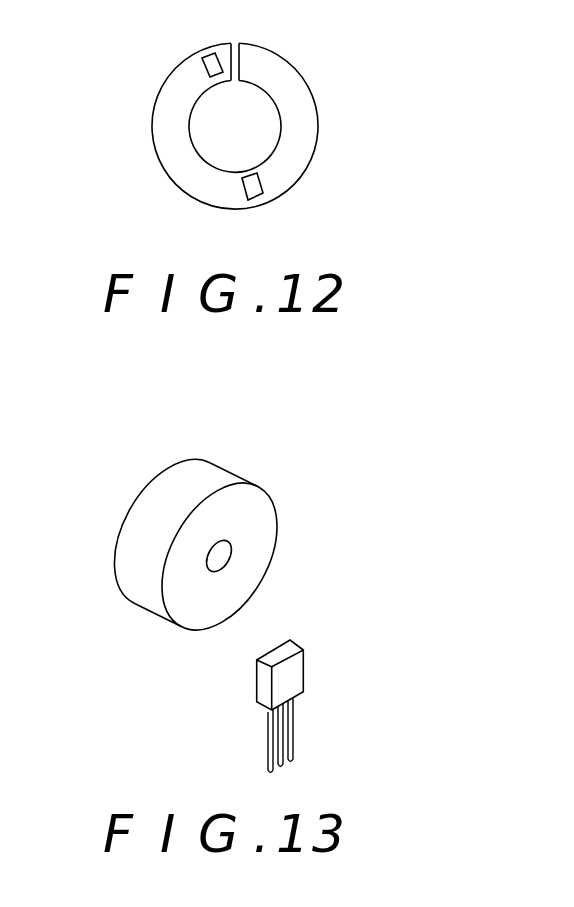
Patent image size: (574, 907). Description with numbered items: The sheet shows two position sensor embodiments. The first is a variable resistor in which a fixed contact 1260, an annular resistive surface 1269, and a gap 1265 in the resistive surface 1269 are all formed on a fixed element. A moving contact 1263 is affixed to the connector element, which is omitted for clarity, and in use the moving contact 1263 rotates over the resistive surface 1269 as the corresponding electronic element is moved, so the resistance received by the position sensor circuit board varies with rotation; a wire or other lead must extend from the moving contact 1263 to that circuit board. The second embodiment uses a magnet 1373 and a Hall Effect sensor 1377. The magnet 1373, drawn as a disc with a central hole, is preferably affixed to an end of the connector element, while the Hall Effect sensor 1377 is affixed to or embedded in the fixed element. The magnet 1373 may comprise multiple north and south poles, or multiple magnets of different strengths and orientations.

In FIG. 12, the fixed contact 1260 is at (210, 57).
In FIG. 12, the moving contact 1263 is at (252, 190).
In FIG. 12, the gap 1265 is at (234, 43).
In FIG. 12, the resistive surface 1269 is at (303, 120).
In FIG. 13, the magnet 1373 is at (262, 521).
In FIG. 13, the Hall Effect sensor 1377 is at (292, 672).